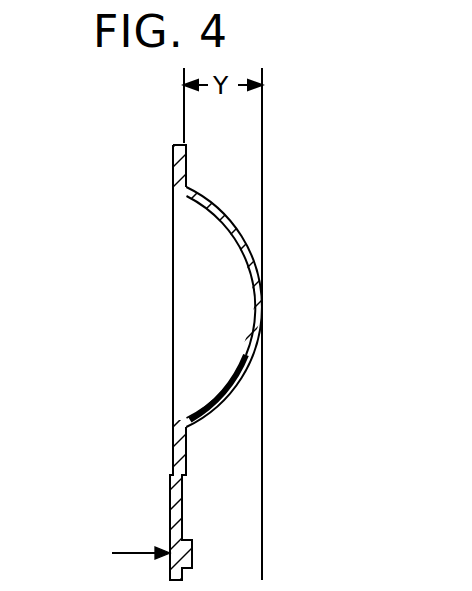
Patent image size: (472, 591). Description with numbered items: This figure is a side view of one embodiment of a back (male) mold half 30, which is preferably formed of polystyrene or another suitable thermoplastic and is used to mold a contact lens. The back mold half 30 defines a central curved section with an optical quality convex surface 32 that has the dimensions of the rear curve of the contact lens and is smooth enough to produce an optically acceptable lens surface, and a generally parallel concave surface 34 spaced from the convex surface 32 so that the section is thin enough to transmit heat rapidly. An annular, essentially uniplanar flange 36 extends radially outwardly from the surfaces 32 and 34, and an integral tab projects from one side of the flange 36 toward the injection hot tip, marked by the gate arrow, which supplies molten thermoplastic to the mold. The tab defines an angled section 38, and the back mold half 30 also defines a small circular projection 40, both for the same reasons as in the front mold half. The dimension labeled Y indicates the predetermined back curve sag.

The back mold half 30 is at (124, 290).
The optical quality convex surface 32 is at (262, 330).
The concave surface 34 is at (246, 353).
The flange 36 is at (173, 165).
The angled section 38 is at (182, 508).
The small circular projection 40 is at (192, 552).